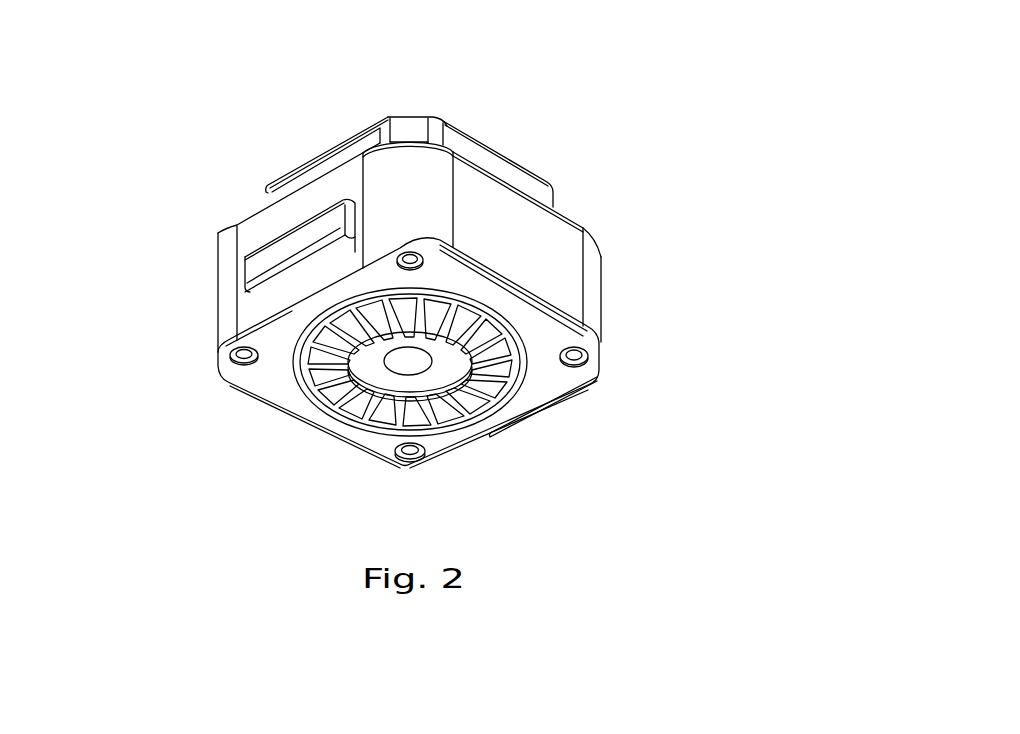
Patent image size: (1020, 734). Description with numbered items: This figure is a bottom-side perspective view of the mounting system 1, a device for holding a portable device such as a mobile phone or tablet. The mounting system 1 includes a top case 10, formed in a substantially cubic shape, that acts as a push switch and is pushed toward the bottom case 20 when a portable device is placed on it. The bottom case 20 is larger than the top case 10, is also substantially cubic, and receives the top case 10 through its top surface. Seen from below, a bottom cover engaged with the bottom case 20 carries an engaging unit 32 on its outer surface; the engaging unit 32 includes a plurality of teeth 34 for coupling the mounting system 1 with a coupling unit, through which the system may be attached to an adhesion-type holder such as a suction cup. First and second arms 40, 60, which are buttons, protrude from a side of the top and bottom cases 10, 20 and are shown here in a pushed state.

The mounting system 1 is at (658, 124).
The top case 10 is at (500, 165).
The bottom case 20 is at (593, 291).
The engaging unit 32 is at (505, 421).
The teeth 34 is at (330, 403).
The first arm 40 is at (257, 263).
The second arm 60 is at (583, 382).